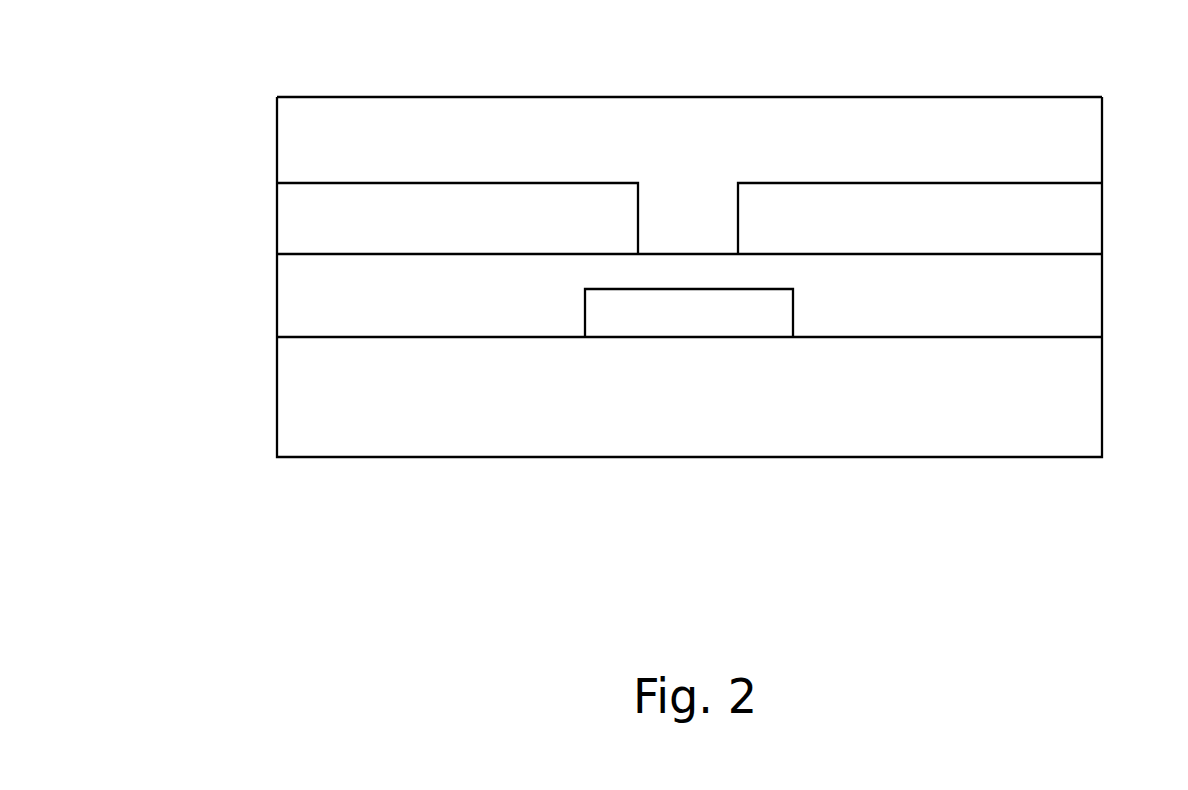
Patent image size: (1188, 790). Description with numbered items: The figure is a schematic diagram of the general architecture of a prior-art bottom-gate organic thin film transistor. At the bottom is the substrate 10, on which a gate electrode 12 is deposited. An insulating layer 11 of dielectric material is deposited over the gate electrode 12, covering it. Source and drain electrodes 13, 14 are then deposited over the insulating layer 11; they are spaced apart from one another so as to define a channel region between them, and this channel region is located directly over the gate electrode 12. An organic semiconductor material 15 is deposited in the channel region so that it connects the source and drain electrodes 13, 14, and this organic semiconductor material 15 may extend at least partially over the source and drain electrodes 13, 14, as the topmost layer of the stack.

The substrate 10 is at (350, 429).
The insulating layer 11 is at (300, 305).
The gate electrode 12 is at (631, 315).
The source electrode 13 is at (300, 227).
The drain electrode 14 is at (1072, 215).
The organic semiconductor material 15 is at (499, 128).